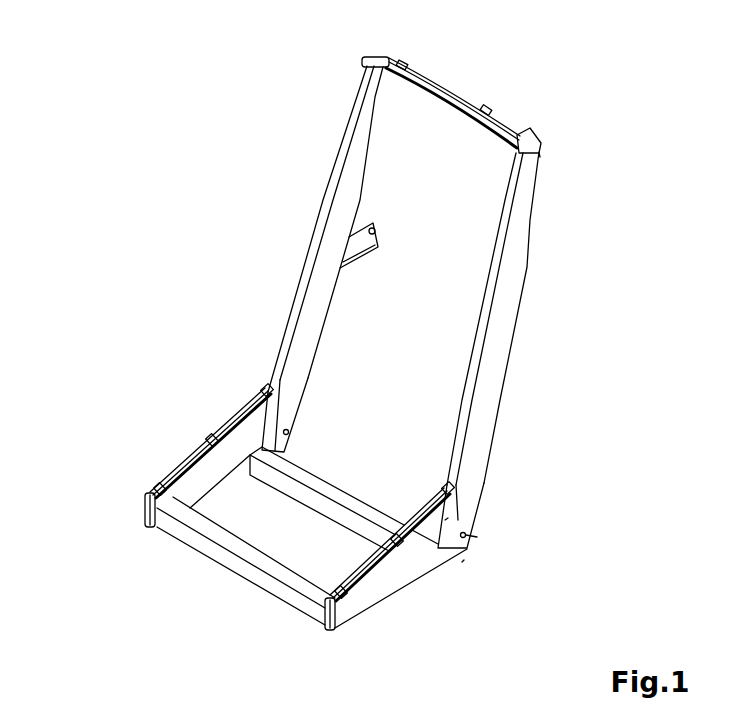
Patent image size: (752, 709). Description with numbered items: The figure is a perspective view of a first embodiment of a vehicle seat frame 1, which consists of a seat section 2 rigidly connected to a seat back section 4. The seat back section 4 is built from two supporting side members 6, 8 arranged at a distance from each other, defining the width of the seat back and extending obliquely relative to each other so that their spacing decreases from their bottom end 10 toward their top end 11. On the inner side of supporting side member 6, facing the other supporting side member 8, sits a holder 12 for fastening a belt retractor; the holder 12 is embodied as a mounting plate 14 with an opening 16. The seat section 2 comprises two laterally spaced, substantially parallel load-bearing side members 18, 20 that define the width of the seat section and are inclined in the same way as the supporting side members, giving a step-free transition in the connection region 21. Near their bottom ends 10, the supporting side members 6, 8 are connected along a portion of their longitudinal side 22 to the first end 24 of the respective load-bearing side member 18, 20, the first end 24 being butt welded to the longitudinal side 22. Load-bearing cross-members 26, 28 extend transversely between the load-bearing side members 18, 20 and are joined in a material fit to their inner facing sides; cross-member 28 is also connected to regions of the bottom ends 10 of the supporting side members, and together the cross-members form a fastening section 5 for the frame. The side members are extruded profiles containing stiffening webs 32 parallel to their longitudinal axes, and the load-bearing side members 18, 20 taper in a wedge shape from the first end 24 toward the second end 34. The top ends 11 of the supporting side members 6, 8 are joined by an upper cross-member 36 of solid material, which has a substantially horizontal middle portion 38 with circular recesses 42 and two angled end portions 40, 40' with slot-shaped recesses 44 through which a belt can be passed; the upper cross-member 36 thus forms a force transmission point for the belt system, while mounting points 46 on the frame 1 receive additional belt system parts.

The frame 1 is at (164, 206).
The seat section 2 is at (186, 608).
The seat back section 4 is at (630, 283).
The fastening section 5 is at (266, 513).
The supporting side member 6 is at (302, 262).
The supporting side member 8 is at (498, 355).
The bottom end 10 is at (463, 563).
The top end 11 is at (547, 162).
The holder 12 is at (374, 252).
The mounting plate 14 is at (357, 255).
The opening 16 is at (372, 231).
The load-bearing side member 18 is at (177, 462).
The load-bearing side member 20 is at (370, 590).
The connection region 21 is at (446, 522).
The longitudinal side 22 is at (445, 477).
The first end 24 is at (267, 414).
The load-bearing cross-member 26 is at (258, 578).
The load-bearing cross-member 28 is at (363, 508).
The stiffening web 32 is at (212, 440).
The second end 34 is at (142, 523).
The upper cross-member 36 is at (452, 100).
The middle portion 38 is at (455, 92).
The end portion 40 is at (327, 57).
The end portion 40' is at (563, 126).
The recess 42 is at (484, 104).
The recess 44 is at (404, 65).
The mounting point 46 is at (288, 432).